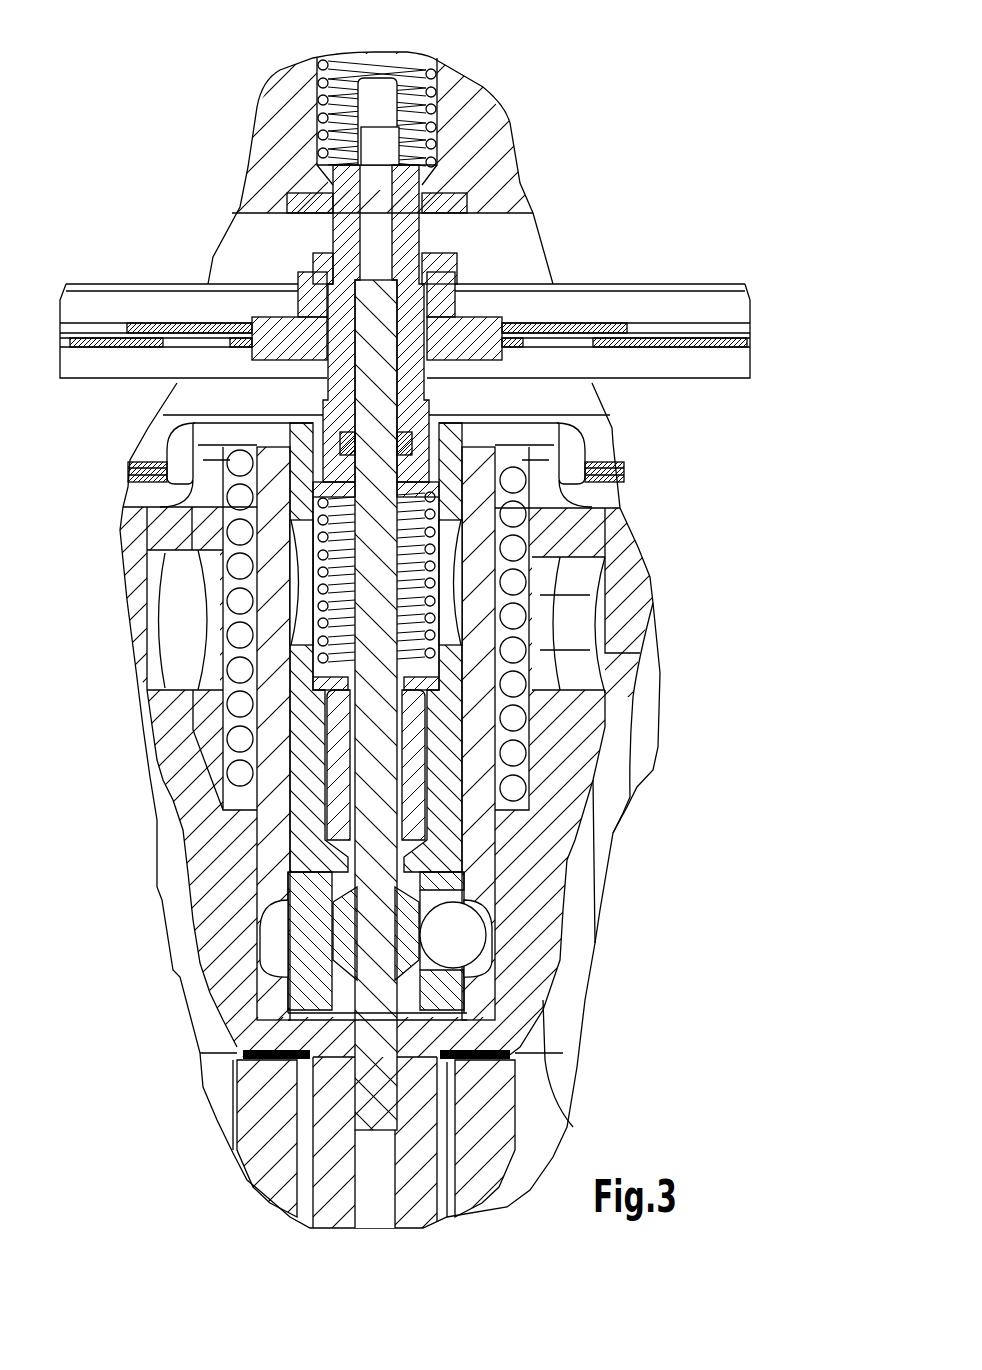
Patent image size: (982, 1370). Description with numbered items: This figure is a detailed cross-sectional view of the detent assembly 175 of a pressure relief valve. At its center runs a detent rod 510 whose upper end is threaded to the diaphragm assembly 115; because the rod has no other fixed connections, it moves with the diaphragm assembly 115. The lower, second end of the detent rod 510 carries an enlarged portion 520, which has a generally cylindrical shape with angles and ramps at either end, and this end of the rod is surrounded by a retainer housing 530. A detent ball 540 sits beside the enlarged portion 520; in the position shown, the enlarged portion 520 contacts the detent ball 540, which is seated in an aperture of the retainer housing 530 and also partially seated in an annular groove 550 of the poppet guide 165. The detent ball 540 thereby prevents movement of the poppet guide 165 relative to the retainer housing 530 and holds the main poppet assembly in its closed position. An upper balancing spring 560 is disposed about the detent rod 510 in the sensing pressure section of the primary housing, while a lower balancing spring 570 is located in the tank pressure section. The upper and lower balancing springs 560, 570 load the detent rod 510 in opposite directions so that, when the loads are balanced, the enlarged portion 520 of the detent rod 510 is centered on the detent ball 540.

The detent assembly 175 is at (150, 200).
The upper balancing spring 560 is at (440, 138).
The detent rod 510 is at (375, 347).
The diaphragm assembly 115 is at (470, 372).
The lower balancing spring 570 is at (430, 600).
The retainer housing 530 is at (447, 823).
The detent ball 540 is at (460, 933).
The annular groove 550 is at (490, 966).
The enlarged portion 520 is at (370, 940).
The poppet guide 165 is at (237, 970).